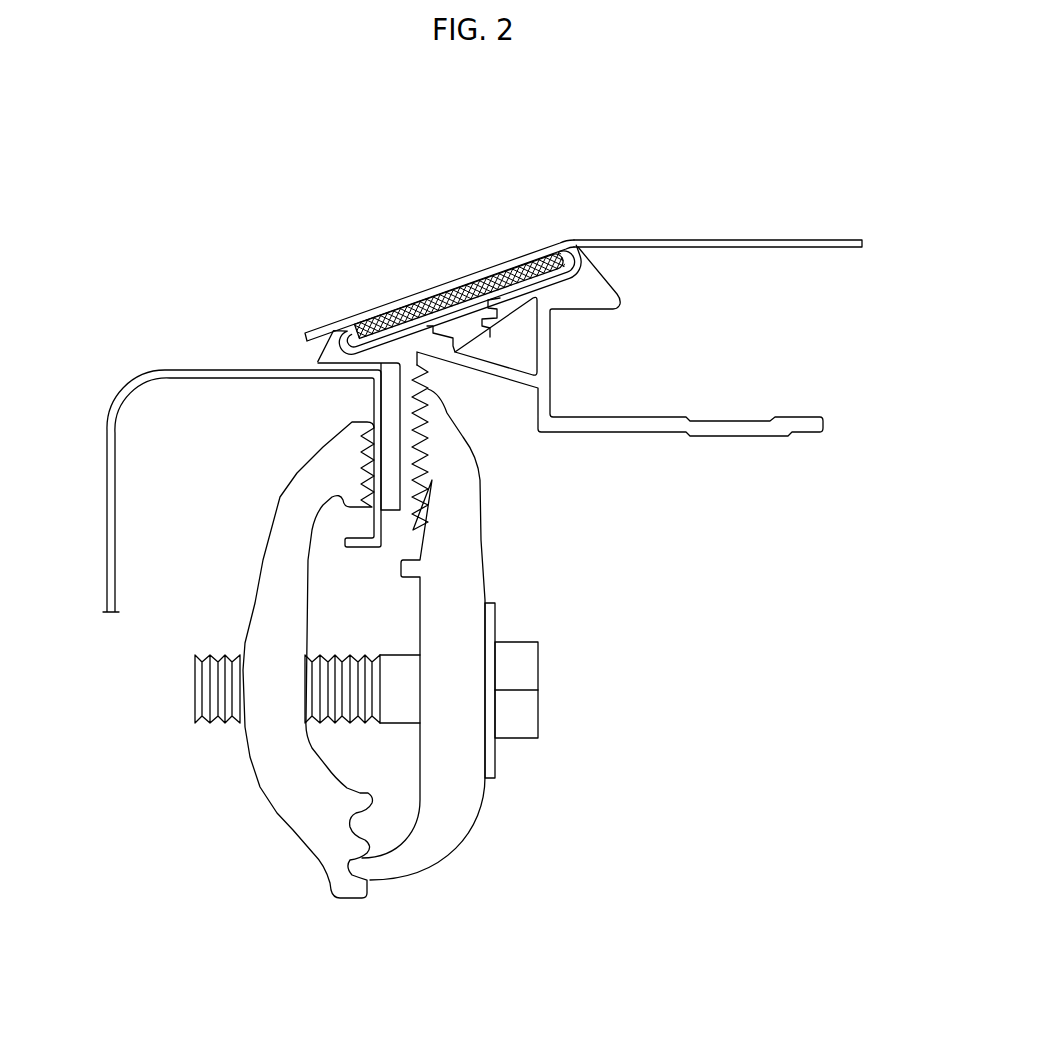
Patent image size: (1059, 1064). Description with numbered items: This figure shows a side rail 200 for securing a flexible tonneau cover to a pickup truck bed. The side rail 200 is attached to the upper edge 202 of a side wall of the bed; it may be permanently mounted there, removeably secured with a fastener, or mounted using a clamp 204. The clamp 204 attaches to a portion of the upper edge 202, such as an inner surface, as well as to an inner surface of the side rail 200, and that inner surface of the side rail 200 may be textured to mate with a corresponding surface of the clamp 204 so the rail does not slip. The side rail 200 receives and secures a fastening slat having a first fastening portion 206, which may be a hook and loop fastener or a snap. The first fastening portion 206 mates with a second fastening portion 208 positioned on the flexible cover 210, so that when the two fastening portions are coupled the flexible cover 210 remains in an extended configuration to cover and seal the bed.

The side rail 200 is at (629, 442).
The upper edge 202 is at (172, 364).
The clamp 204 is at (256, 794).
The first fastening portion 206 is at (527, 272).
The second fastening portion 208 is at (356, 302).
The flexible cover 210 is at (765, 234).